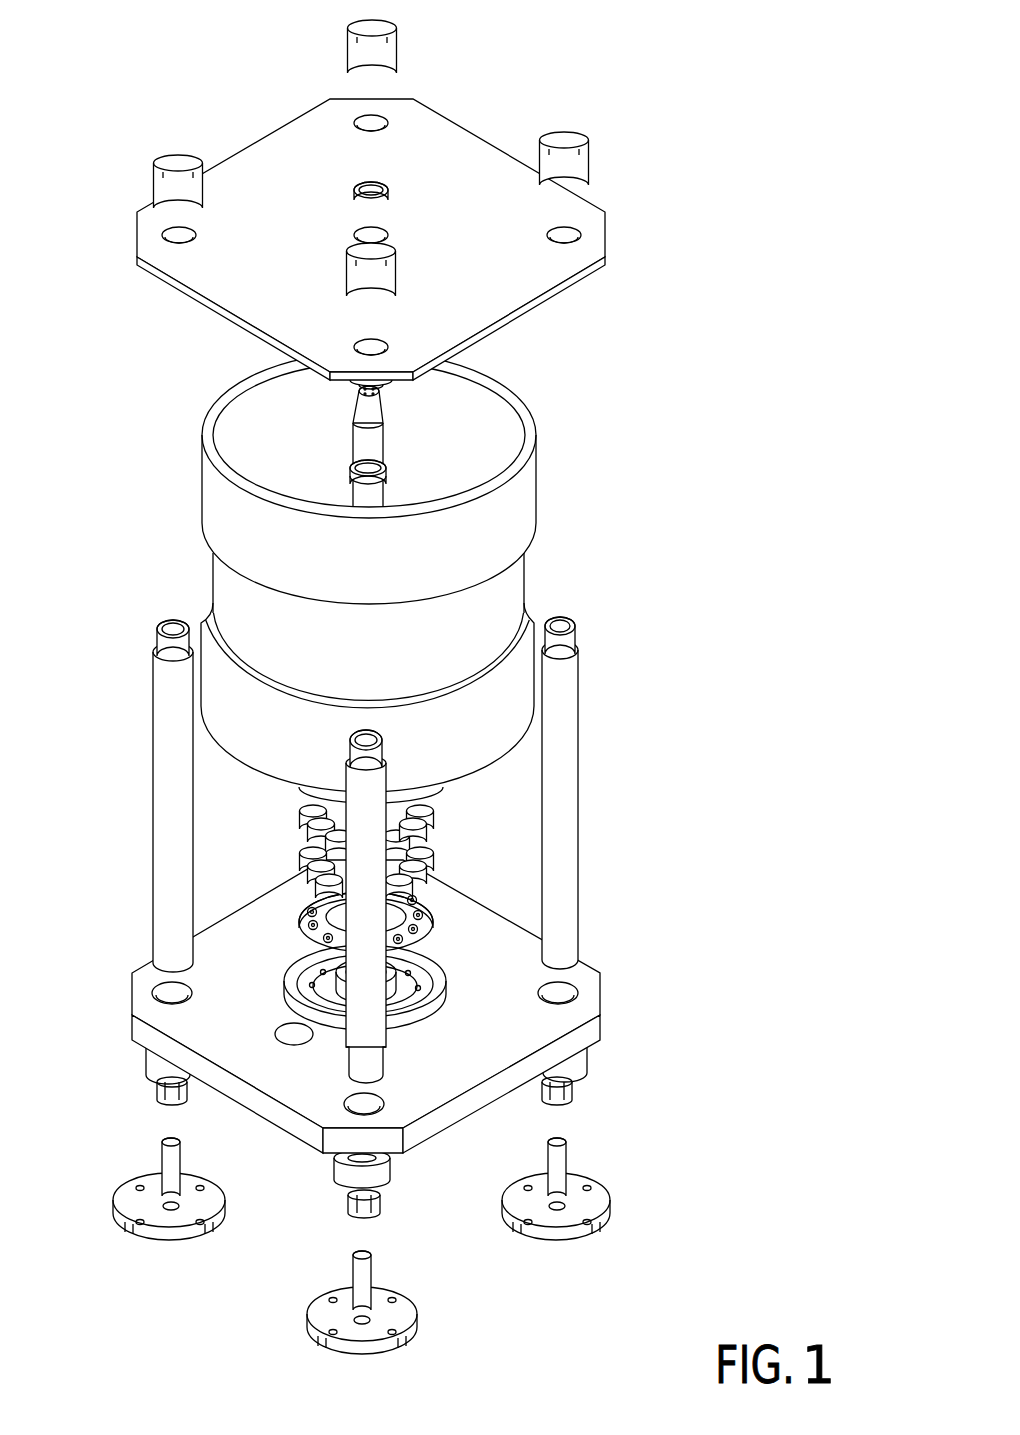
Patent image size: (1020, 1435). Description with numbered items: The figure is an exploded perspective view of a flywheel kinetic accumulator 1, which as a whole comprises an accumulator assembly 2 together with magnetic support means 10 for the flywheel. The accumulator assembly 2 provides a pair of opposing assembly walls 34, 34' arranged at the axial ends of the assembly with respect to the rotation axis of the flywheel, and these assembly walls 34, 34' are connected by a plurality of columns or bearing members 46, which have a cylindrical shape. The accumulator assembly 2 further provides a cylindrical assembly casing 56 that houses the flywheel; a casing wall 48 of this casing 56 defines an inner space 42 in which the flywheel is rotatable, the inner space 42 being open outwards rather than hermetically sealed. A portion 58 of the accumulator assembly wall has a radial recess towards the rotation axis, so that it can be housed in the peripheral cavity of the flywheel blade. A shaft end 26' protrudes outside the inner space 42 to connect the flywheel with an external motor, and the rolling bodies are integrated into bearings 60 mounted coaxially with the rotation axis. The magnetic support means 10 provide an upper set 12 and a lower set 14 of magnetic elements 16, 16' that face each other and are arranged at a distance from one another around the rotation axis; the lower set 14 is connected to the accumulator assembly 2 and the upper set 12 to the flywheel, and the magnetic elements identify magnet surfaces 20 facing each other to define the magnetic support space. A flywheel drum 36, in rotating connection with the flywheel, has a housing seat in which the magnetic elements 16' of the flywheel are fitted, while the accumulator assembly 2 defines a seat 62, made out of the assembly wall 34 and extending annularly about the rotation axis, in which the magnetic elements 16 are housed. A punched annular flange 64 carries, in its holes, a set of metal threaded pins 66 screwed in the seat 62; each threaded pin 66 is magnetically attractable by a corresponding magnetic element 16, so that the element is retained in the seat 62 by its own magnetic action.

The flywheel kinetic accumulator 1 is at (407, 252).
The accumulator assembly 2 is at (369, 567).
The magnetic support means 10 is at (359, 894).
The upper set of magnetic elements 12 is at (298, 822).
The lower set of magnetic elements 14 is at (298, 862).
The magnetic element 16 is at (520, 876).
The magnetic element 16' is at (519, 788).
The magnet surface 20 is at (430, 888).
The shaft end 26' is at (464, 422).
The assembly wall 34 is at (366, 1057).
The assembly wall 34' is at (371, 204).
The flywheel drum 36 is at (323, 797).
The inner space 42 is at (482, 442).
The columns or bearing members 46 is at (153, 668).
The casing wall 48 is at (230, 424).
The cylindrical assembly casing 56 is at (395, 467).
The radially recessed portion 58 is at (250, 617).
The bearing 60 is at (350, 192).
The seat 62 is at (310, 971).
The punched annular flange 64 is at (295, 920).
The threaded pin 66 is at (246, 1010).